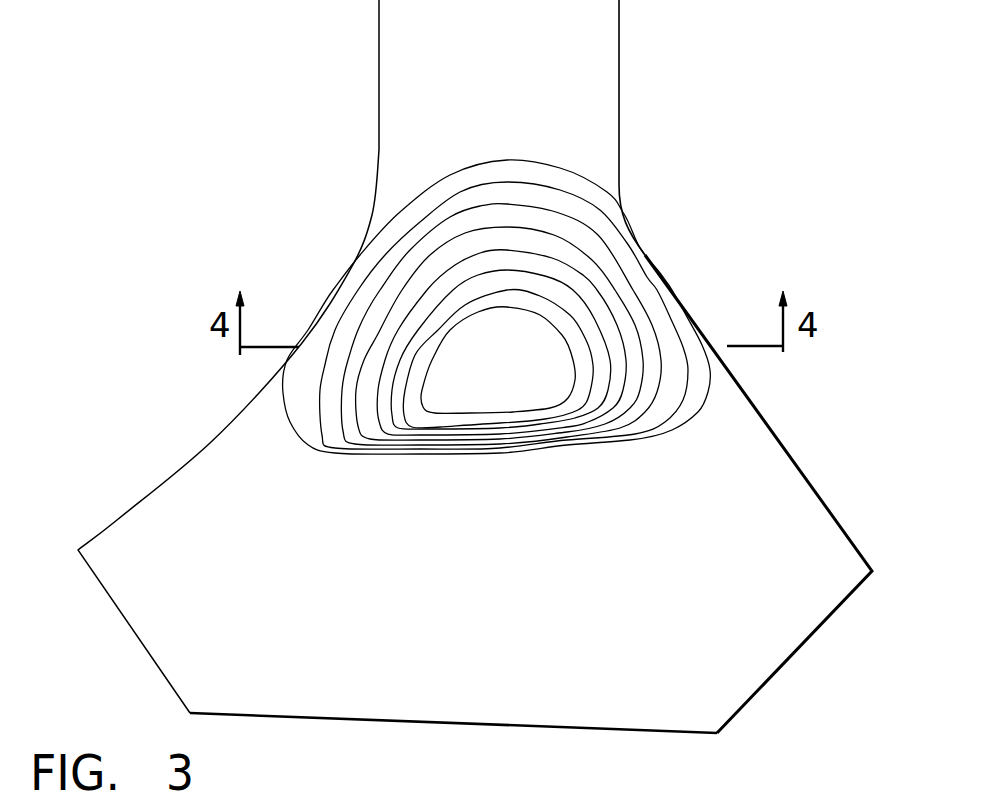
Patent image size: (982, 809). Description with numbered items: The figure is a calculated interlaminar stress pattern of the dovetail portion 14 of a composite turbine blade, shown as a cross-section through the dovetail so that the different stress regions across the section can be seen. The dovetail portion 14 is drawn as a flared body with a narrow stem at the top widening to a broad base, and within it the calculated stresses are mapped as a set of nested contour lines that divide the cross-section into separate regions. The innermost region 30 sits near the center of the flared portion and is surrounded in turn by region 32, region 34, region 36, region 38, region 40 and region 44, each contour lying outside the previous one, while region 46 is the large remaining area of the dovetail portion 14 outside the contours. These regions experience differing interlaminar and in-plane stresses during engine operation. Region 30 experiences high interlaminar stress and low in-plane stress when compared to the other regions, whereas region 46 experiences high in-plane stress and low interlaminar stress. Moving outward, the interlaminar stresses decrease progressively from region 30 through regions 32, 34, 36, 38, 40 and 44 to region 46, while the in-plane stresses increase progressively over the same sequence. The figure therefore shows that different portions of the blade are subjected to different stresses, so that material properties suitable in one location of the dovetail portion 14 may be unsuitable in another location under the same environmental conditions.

The dovetail portion 14 is at (772, 472).
The region 30 is at (550, 382).
The region 32 is at (523, 413).
The region 34 is at (413, 421).
The region 36 is at (390, 426).
The region 38 is at (360, 417).
The region 40 is at (342, 418).
The region 44 is at (308, 423).
The region 46 is at (229, 555).